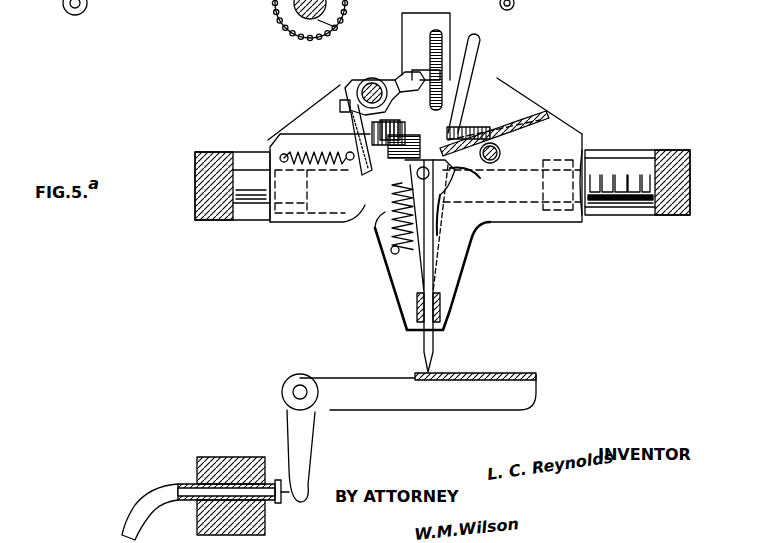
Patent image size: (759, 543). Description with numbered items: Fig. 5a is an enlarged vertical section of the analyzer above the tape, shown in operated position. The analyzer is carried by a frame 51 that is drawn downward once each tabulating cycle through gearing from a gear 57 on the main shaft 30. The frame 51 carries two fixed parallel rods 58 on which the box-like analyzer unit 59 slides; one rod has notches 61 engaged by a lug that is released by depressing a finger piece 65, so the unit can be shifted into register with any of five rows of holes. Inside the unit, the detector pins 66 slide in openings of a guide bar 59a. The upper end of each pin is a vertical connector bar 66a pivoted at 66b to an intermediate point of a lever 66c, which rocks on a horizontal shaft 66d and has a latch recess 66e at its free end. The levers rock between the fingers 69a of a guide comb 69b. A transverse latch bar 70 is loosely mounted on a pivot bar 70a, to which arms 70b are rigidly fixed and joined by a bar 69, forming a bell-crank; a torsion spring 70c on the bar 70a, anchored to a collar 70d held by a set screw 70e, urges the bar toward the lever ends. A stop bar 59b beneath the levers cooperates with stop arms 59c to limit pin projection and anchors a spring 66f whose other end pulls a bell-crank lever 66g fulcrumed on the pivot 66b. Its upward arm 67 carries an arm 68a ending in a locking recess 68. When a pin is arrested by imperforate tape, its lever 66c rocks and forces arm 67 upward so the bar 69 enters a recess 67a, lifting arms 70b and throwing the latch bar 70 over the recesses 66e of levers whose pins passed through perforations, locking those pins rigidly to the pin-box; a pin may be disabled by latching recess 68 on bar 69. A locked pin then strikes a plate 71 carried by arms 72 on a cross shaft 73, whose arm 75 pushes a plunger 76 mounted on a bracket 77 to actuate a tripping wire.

The shaft 30 is at (300, 17).
The frame 51 is at (688, 186).
The gear 57 is at (328, 24).
The rods 58 is at (620, 203).
The analyzer unit 59 is at (285, 130).
The guide bar 59a is at (437, 316).
The stop bar 59b is at (395, 268).
The stop arms 59c is at (349, 211).
The notches 61 is at (617, 177).
The finger piece 65 is at (428, 13).
The analyzer pins 66 is at (440, 318).
The connector bars 66a is at (468, 250).
The pivot 66b is at (442, 173).
The lever 66c is at (480, 178).
The horizontal shaft 66d is at (501, 153).
The latch recess 66e is at (385, 228).
The spring 66f is at (390, 248).
The bell-crank lever 66g is at (443, 203).
The arm 67 is at (440, 112).
The recess 67a is at (462, 90).
The locking recess 68 is at (400, 80).
The arm 68a is at (447, 89).
The bar 69 is at (422, 73).
The teeth or fingers 69a is at (470, 135).
The guide comb 69b is at (537, 112).
The transverse latch bar 70 is at (357, 160).
The pivot bar 70a is at (350, 88).
The arms 70b is at (383, 77).
The torsion spring 70c is at (350, 133).
The collar 70d is at (360, 78).
The set screw 70e is at (340, 106).
The plate 71 is at (477, 373).
The arms 72 is at (408, 405).
The cross shaft 73 is at (292, 392).
The arm 75 is at (307, 483).
The plunger 76 is at (240, 490).
The bracket 77 is at (197, 470).